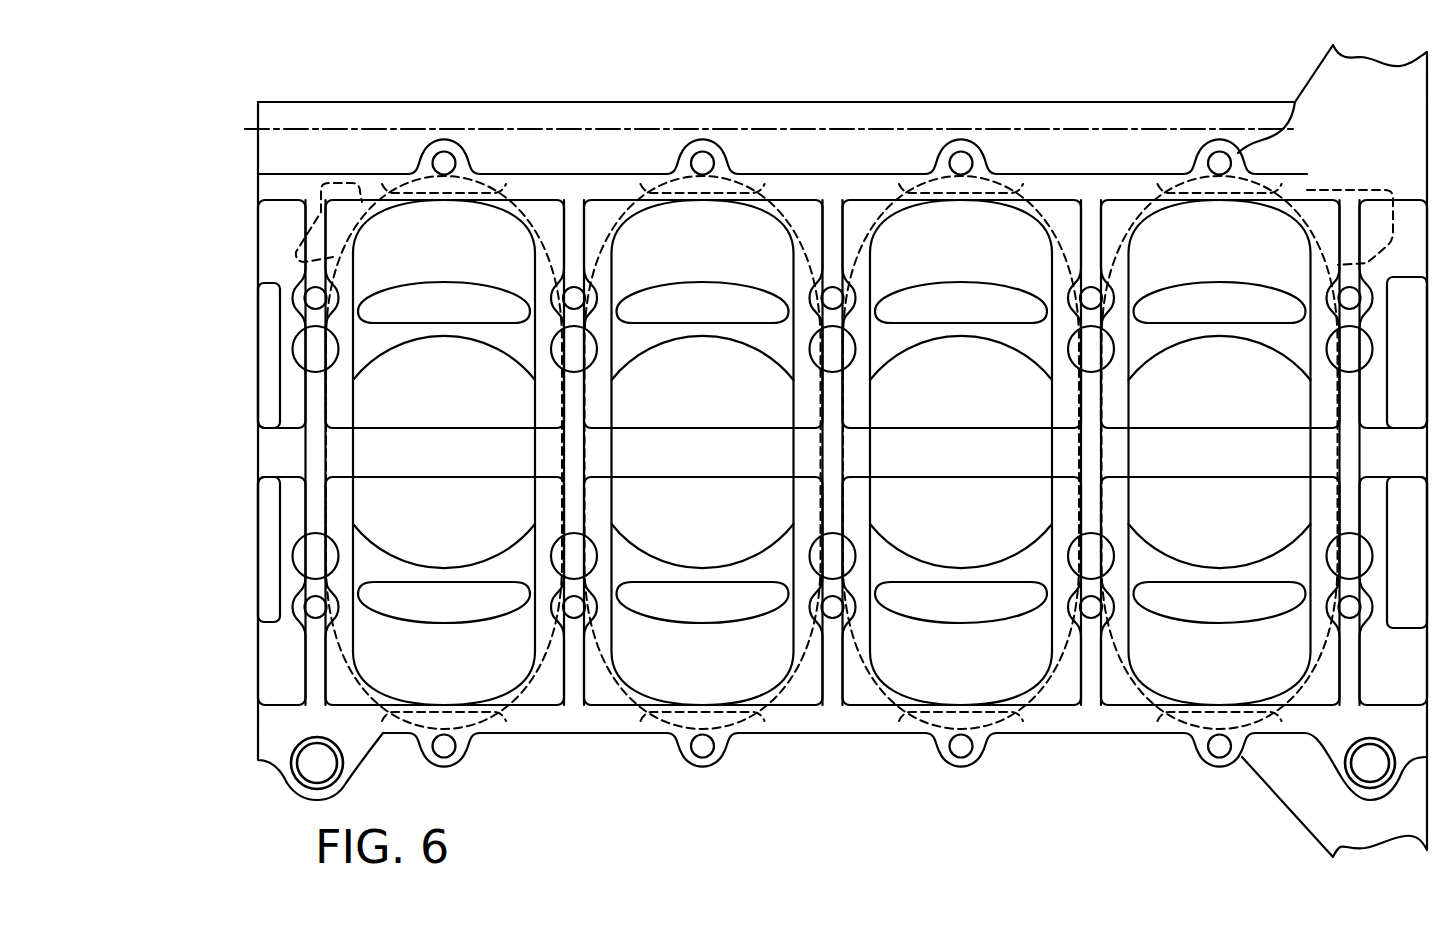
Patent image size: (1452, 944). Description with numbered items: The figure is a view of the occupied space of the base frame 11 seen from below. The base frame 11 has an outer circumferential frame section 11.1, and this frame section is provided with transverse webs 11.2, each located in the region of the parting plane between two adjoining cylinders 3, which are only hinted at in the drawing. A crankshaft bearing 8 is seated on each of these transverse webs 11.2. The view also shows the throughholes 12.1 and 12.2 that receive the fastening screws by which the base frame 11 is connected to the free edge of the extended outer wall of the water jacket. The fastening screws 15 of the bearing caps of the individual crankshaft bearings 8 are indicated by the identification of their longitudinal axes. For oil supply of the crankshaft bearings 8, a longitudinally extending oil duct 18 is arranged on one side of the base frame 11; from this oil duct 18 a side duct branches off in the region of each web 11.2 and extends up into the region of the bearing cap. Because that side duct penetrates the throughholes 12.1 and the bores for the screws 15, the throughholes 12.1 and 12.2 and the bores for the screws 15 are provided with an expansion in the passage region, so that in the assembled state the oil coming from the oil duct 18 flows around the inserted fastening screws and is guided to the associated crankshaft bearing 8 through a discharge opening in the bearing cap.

The cylinder 3 is at (479, 421).
The crankshaft bearing 8 is at (515, 480).
The base frame 11 is at (240, 252).
The outer circumferential frame section 11.1 is at (337, 113).
The transverse web 11.2 is at (607, 413).
The throughhole 12.1 is at (577, 608).
The throughhole 12.2 is at (699, 748).
The fastening screw 15 is at (573, 560).
The longitudinally extending oil duct 18 is at (532, 128).